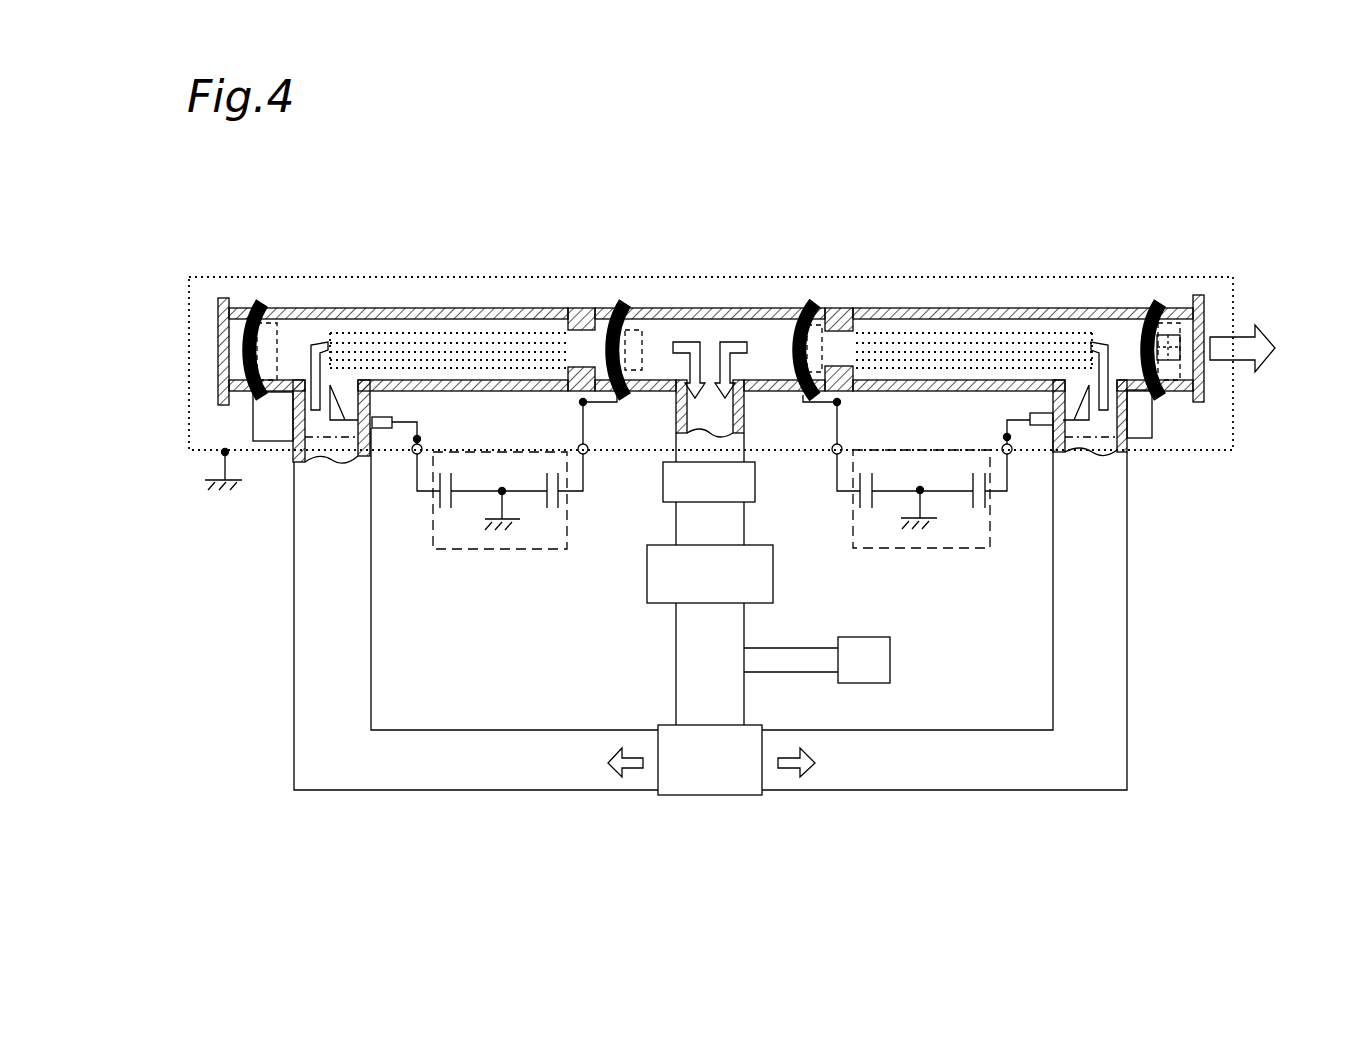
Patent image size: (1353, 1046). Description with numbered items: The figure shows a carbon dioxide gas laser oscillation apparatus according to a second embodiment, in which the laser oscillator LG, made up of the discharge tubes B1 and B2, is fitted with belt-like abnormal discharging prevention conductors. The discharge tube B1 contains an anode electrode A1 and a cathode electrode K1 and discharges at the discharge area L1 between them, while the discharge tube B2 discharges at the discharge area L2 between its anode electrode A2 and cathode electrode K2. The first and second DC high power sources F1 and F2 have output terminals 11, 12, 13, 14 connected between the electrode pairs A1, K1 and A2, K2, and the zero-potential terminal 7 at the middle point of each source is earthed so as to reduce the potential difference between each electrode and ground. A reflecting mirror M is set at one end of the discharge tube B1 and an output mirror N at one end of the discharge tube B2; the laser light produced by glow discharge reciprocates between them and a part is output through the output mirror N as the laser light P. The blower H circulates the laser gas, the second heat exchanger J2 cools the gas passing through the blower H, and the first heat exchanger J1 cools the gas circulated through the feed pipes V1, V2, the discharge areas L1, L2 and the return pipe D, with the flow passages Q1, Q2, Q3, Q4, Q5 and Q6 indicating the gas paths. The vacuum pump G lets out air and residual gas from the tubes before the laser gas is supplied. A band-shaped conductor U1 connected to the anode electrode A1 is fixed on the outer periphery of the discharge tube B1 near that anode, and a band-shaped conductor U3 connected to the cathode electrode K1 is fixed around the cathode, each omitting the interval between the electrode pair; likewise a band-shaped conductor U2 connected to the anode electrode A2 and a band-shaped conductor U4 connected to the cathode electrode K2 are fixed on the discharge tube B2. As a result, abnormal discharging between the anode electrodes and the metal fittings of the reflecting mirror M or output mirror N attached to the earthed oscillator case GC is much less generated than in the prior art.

The band-shaped conductor U1 is at (251, 300).
The flow passage Q2 is at (314, 340).
The discharge area L1 is at (378, 333).
The discharge tube B1 is at (428, 307).
The cathode electrode K1 is at (580, 307).
The band-shaped conductor U3 is at (620, 298).
The flow passage Q3 is at (683, 340).
The flow passage Q6 is at (731, 340).
The band-shaped conductor U4 is at (808, 298).
The cathode electrode K2 is at (848, 307).
The discharge tube B2 is at (966, 307).
The discharge area L2 is at (1016, 330).
The flow passage Q5 is at (1110, 338).
The band-shaped conductor U2 is at (1160, 298).
The laser oscillator LG is at (1244, 315).
The reflecting mirror M is at (218, 365).
The laser light P is at (1262, 374).
The output mirror N is at (1196, 403).
The oscillator case GC is at (186, 441).
The anode electrode A1 is at (335, 423).
The anode electrode A2 is at (1090, 423).
The output terminal 11 is at (415, 456).
The output terminal 12 is at (585, 456).
The output terminal 13 is at (838, 456).
The output terminal 14 is at (1010, 455).
The zero-potential terminal 7 is at (503, 490).
The first DC high power source F1 is at (493, 552).
The second DC high power source F2 is at (935, 550).
The first heat exchanger J1 is at (663, 485).
The return pipe D is at (748, 413).
The blower H is at (773, 575).
The vacuum pump G is at (890, 668).
The second heat exchanger J2 is at (718, 795).
The feed pipe V1 is at (294, 665).
The feed pipe V2 is at (1127, 660).
The flow passage Q1 is at (628, 773).
The flow passage Q4 is at (790, 773).